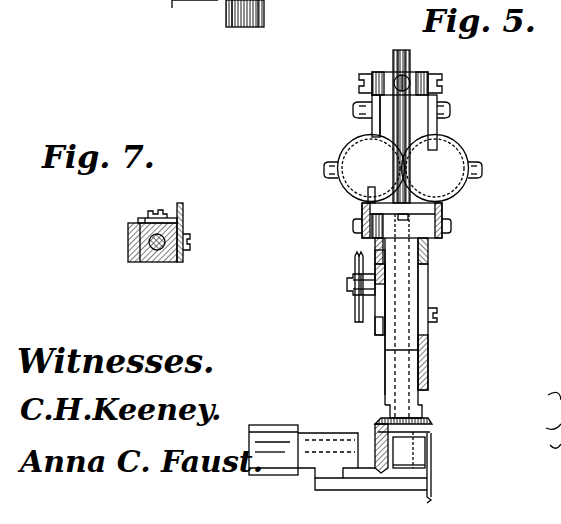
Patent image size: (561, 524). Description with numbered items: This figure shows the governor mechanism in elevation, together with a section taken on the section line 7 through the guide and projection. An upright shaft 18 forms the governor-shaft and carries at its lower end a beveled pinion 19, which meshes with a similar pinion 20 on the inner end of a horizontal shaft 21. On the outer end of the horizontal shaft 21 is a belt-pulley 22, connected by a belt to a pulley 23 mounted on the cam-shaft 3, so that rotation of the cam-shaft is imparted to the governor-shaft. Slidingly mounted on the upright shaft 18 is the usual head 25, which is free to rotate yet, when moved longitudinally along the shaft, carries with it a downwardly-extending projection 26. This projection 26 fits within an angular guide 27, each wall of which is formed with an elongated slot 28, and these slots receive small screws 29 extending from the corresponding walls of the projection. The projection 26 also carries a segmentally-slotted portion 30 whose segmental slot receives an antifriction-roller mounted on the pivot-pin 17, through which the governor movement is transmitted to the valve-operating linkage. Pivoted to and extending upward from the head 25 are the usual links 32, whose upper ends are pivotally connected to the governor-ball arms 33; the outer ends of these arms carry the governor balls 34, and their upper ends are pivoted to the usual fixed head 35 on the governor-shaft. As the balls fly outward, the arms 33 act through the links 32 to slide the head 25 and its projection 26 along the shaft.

In FIG. 5, the cam-shaft 3 is at (244, 27).
In FIG. 5, the section line 7 is at (362, 311).
In FIG. 5, the pivot-pin 17 is at (347, 285).
In FIG. 5, the upright shaft 18 is at (410, 130).
In FIG. 7, the upright shaft 18 is at (161, 252).
In FIG. 5, the beveled pinion 19 is at (428, 421).
In FIG. 5, the pinion 20 is at (375, 425).
In FIG. 5, the horizontal shaft 21 is at (316, 438).
In FIG. 5, the belt-pulley 22 is at (275, 417).
In FIG. 5, the pulley 23 is at (192, 17).
In FIG. 5, the head 25 is at (410, 222).
In FIG. 5, the downwardly-extending projection 26 is at (385, 340).
In FIG. 7, the downwardly-extending projection 26 is at (144, 262).
In FIG. 5, the angular guide 27 is at (428, 360).
In FIG. 7, the angular guide 27 is at (183, 220).
In FIG. 5, the elongated slot 28 is at (430, 271).
In FIG. 7, the elongated slot 28 is at (138, 220).
In FIG. 5, the small screws 29 is at (393, 318).
In FIG. 7, the small screws 29 is at (157, 211).
In FIG. 5, the segmentally-slotted portion 30 is at (376, 256).
In FIG. 5, the links 32 is at (362, 208).
In FIG. 5, the governor-ball arms 33 is at (372, 127).
In FIG. 5, the governor balls 34 is at (350, 158).
In FIG. 5, the fixed head 35 is at (392, 72).